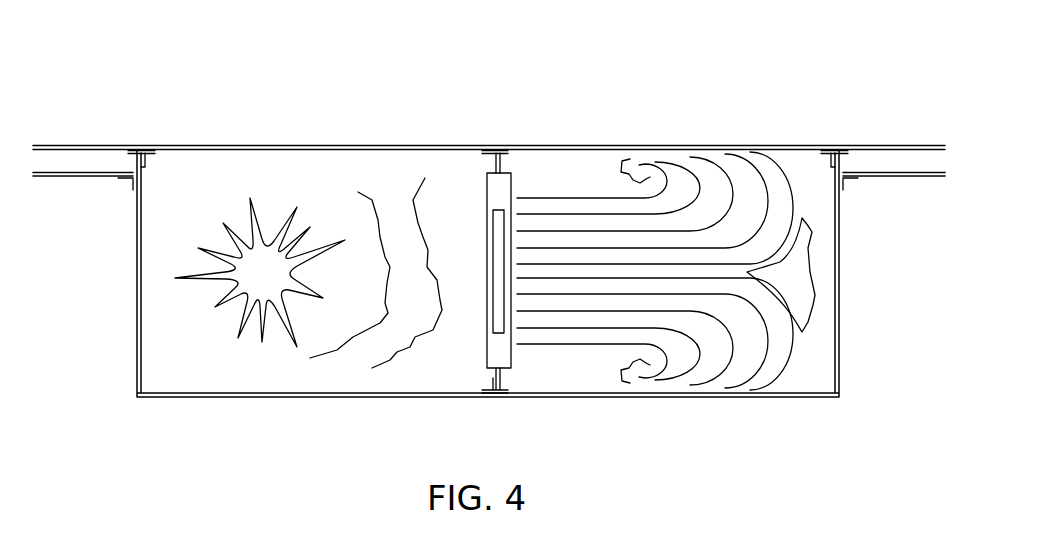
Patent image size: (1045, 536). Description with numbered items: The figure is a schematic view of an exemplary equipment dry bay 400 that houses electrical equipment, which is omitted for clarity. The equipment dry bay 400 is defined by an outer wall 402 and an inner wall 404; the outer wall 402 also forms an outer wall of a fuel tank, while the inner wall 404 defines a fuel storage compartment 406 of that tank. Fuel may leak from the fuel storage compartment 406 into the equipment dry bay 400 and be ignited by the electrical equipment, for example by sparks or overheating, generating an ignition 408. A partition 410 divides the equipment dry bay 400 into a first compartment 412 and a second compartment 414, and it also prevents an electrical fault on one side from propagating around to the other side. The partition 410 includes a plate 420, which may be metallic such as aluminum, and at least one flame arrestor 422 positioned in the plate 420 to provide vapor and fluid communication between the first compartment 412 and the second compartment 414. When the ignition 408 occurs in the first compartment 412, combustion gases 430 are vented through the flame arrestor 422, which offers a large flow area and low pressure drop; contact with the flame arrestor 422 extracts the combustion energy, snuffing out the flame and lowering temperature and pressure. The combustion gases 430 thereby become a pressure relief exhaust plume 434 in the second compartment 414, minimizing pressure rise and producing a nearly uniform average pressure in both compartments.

The equipment dry bay 400 is at (663, 58).
The outer wall 402 is at (174, 145).
The inner wall 404 is at (136, 343).
The fuel storage compartment 406 is at (83, 289).
The ignition 408 is at (213, 252).
The partition 410 is at (500, 165).
The first compartment 412 is at (266, 182).
The second compartment 414 is at (584, 182).
The plate 420 is at (488, 193).
The flame arrestor 422 is at (498, 327).
The combustion gases 430 is at (373, 193).
The pressure relief exhaust plume 434 is at (781, 150).